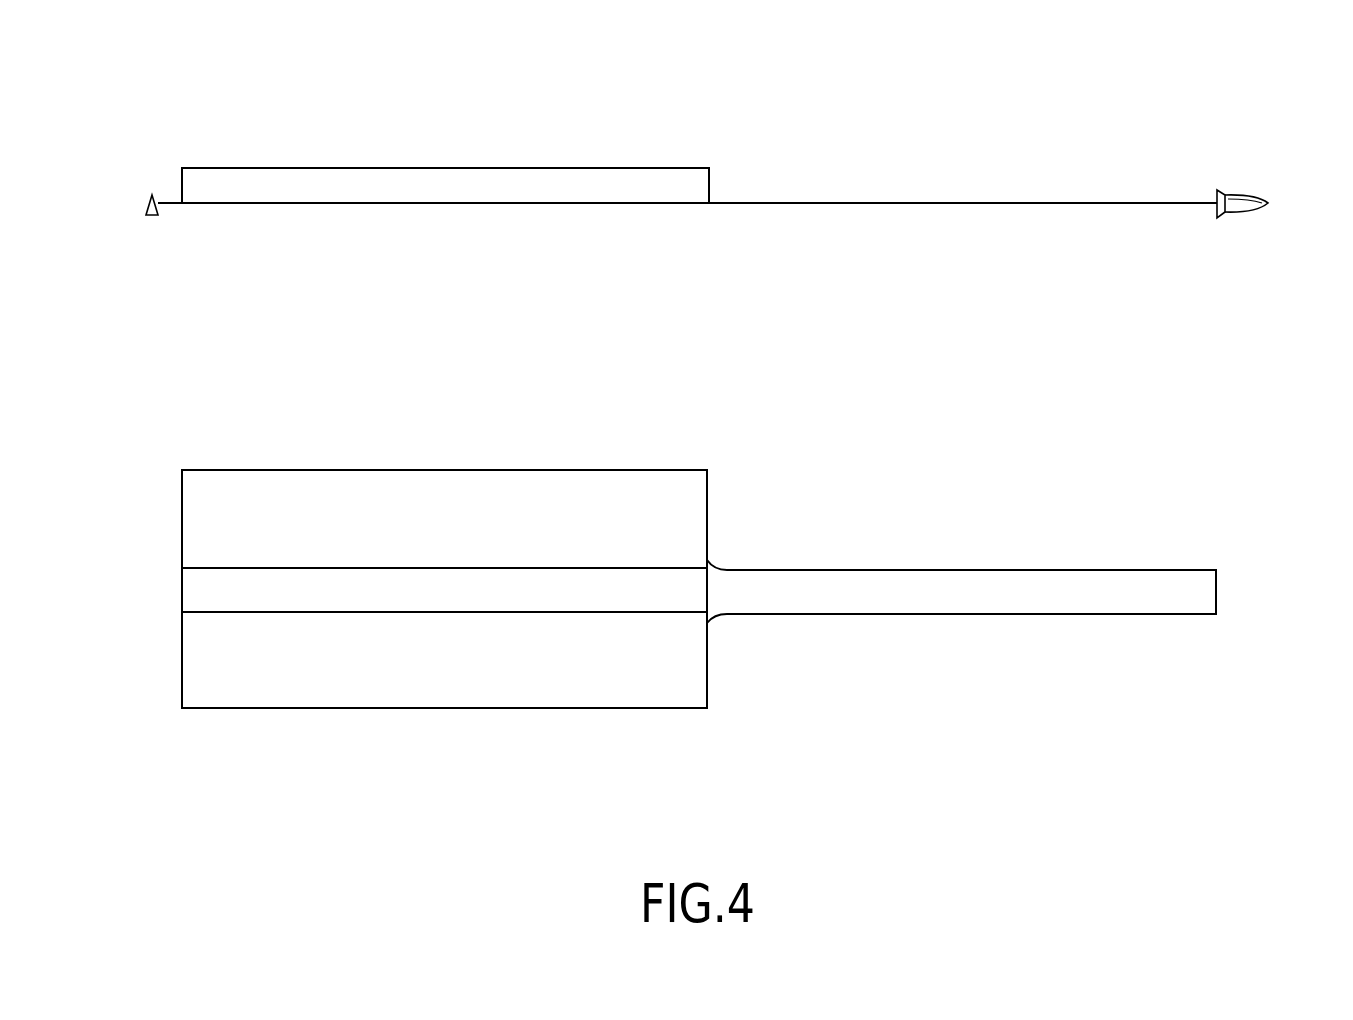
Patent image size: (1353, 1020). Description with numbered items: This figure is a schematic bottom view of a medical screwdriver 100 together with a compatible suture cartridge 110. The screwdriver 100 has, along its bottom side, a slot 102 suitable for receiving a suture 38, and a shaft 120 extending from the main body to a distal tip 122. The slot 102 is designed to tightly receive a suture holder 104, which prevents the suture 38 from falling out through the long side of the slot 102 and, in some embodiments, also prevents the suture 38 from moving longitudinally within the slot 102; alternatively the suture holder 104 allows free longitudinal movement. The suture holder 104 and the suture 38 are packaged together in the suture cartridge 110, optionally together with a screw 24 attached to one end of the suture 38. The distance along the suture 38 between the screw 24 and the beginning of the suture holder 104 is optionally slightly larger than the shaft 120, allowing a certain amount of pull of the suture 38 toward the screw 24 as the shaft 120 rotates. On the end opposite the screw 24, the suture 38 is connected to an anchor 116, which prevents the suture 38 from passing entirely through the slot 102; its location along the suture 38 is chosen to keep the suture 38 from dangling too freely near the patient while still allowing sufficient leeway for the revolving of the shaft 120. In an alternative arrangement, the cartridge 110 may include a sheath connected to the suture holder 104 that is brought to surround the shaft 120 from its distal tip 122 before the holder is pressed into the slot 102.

The suture cartridge 110 is at (1146, 100).
The suture 38 is at (865, 202).
The anchor 116 is at (137, 202).
The suture holder 104 is at (497, 168).
The screw 24 is at (1238, 195).
The medical screwdriver 100 is at (610, 470).
The slot 102 is at (333, 567).
The shaft 120 is at (897, 570).
The distal tip 122 is at (1218, 593).